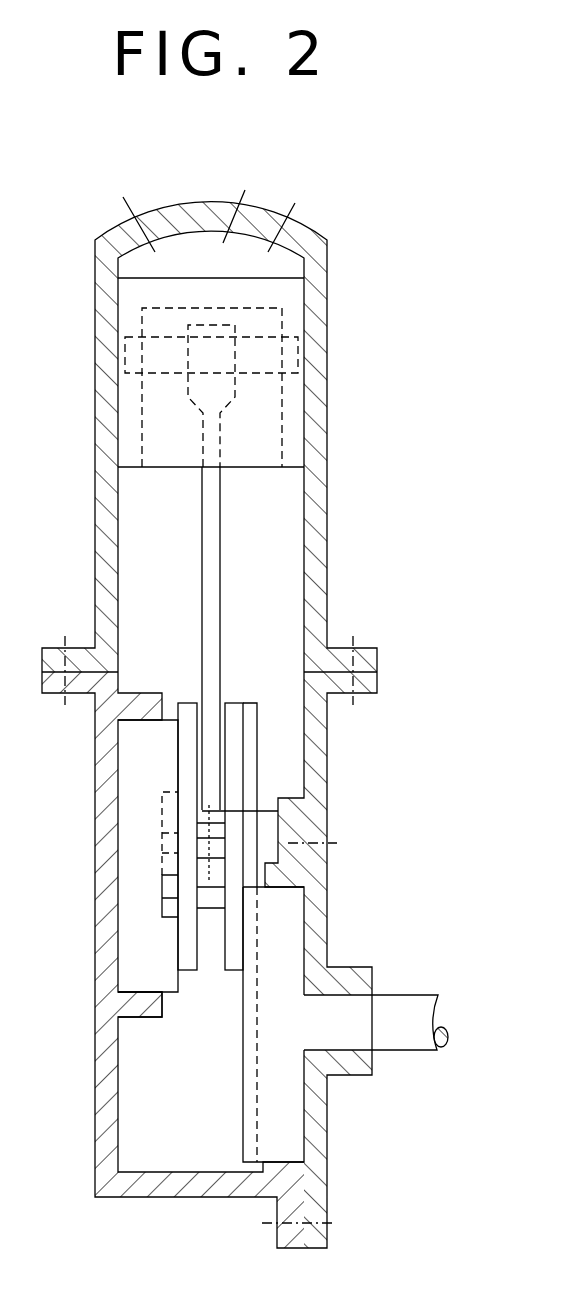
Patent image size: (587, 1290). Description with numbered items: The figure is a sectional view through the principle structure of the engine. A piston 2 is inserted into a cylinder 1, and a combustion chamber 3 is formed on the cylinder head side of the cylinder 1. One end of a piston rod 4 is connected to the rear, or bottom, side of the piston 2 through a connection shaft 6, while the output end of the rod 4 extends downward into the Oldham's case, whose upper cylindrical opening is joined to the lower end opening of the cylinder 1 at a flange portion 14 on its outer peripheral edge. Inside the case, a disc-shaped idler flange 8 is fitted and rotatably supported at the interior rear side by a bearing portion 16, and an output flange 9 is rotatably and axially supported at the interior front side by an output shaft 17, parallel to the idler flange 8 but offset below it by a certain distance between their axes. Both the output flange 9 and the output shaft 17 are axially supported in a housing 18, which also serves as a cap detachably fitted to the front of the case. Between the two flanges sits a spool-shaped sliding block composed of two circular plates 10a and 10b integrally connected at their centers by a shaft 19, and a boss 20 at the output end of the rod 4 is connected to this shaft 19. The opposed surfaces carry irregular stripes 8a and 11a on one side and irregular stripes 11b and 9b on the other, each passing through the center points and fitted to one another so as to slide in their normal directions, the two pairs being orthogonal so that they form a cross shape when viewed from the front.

The cylinder 1 is at (328, 277).
The piston 2 is at (123, 427).
The combustion chamber 3 is at (226, 245).
The piston rod 4 is at (223, 522).
The connection shaft 6 is at (297, 373).
The idler flange 8 is at (130, 762).
The irregular stripe 8a is at (160, 815).
The output flange 9 is at (285, 927).
The irregular stripe 9b is at (257, 906).
The circular plate 10a is at (177, 702).
The circular plate 10b is at (233, 702).
The irregular stripe 11a is at (160, 897).
The irregular stripe 11b is at (252, 741).
The flange portion 14 is at (378, 680).
The bearing portion 16 is at (142, 1018).
The output shaft 17 is at (437, 1008).
The housing 18 is at (327, 1143).
The shaft 19 is at (222, 886).
The boss 20 is at (280, 811).